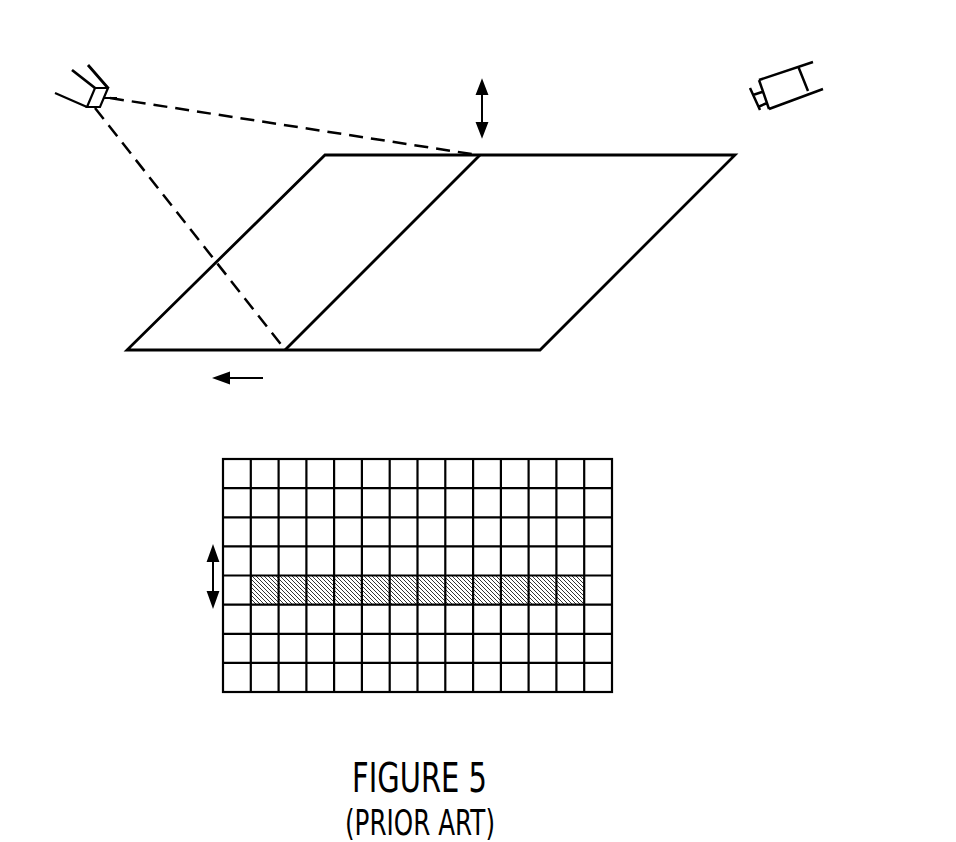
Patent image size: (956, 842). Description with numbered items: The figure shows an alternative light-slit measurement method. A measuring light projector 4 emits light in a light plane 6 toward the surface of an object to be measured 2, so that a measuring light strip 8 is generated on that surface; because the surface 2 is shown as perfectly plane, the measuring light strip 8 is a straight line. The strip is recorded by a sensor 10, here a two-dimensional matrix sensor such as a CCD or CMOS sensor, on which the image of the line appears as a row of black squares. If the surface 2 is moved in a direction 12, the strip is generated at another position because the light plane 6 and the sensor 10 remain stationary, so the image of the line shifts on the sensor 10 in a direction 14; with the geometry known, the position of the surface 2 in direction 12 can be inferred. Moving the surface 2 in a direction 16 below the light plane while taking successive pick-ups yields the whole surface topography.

The surface of the object to be measured 2 is at (613, 255).
The measuring light projector 4 is at (72, 88).
The light plane 6 is at (258, 153).
The measuring light strip 8 is at (445, 190).
The sensor 10 is at (805, 80).
The direction 12 is at (487, 107).
The direction 14 is at (210, 577).
The direction 16 is at (245, 392).